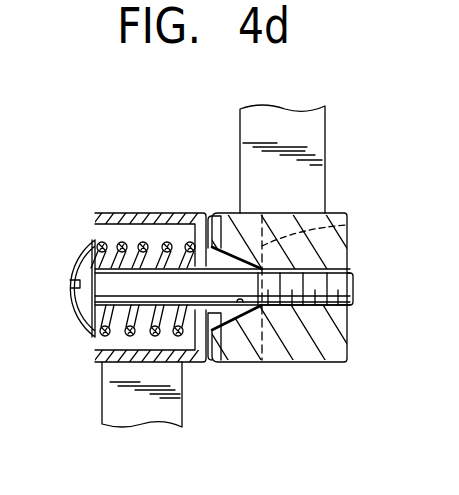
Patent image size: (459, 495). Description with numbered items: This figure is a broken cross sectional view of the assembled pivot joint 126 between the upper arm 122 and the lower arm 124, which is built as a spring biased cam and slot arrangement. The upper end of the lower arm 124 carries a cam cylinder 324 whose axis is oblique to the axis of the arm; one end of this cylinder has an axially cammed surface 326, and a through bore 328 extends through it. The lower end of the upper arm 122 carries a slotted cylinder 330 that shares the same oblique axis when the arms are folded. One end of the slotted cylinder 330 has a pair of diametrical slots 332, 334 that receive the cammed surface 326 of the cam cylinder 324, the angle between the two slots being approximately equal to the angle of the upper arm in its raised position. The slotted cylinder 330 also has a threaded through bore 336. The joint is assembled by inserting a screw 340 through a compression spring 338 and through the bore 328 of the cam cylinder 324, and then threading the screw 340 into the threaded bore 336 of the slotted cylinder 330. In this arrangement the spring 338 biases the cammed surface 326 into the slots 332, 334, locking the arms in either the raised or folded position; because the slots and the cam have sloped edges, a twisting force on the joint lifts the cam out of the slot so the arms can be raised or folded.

The upper arm 122 is at (305, 136).
The lower arm 124 is at (170, 408).
The pivot joint 126 is at (150, 142).
The cam cylinder 324 is at (130, 212).
The axially cammed surface 326 is at (219, 242).
The through bore 328 is at (239, 305).
The slotted cylinder 330 is at (342, 213).
The diametrical slot 332 is at (287, 363).
The diametrical slot 334 is at (347, 226).
The threaded through bore 336 is at (327, 268).
The compression spring 338 is at (107, 328).
The screw 340 is at (83, 247).